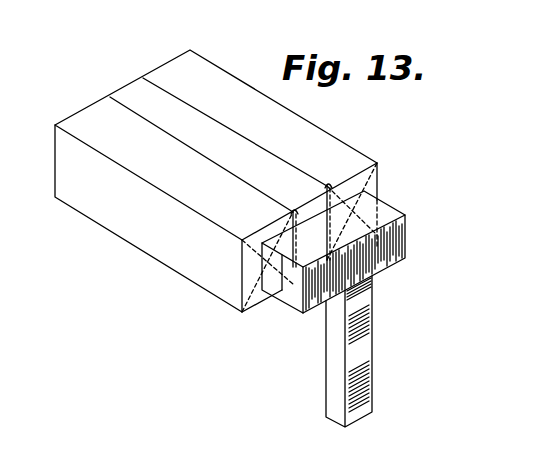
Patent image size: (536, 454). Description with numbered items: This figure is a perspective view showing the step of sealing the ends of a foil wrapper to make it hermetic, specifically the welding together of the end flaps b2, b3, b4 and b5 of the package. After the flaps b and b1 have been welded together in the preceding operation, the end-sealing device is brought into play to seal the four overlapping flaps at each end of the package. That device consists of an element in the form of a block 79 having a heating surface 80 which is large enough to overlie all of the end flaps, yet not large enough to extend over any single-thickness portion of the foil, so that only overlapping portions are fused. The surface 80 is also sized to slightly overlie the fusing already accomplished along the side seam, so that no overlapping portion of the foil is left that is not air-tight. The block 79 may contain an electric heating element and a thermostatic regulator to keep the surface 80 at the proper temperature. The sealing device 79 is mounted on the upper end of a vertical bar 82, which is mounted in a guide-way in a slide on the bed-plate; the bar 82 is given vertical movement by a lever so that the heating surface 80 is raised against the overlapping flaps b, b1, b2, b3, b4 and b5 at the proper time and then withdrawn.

The flap b is at (103, 117).
The flap b1 is at (183, 68).
The block 79 is at (282, 240).
The heating surface 80 is at (343, 180).
The end flap b3 is at (360, 195).
The end flap b4 is at (360, 187).
The end flap b2 is at (252, 270).
The end flap b5 is at (273, 290).
The vertical bar 82 is at (362, 340).